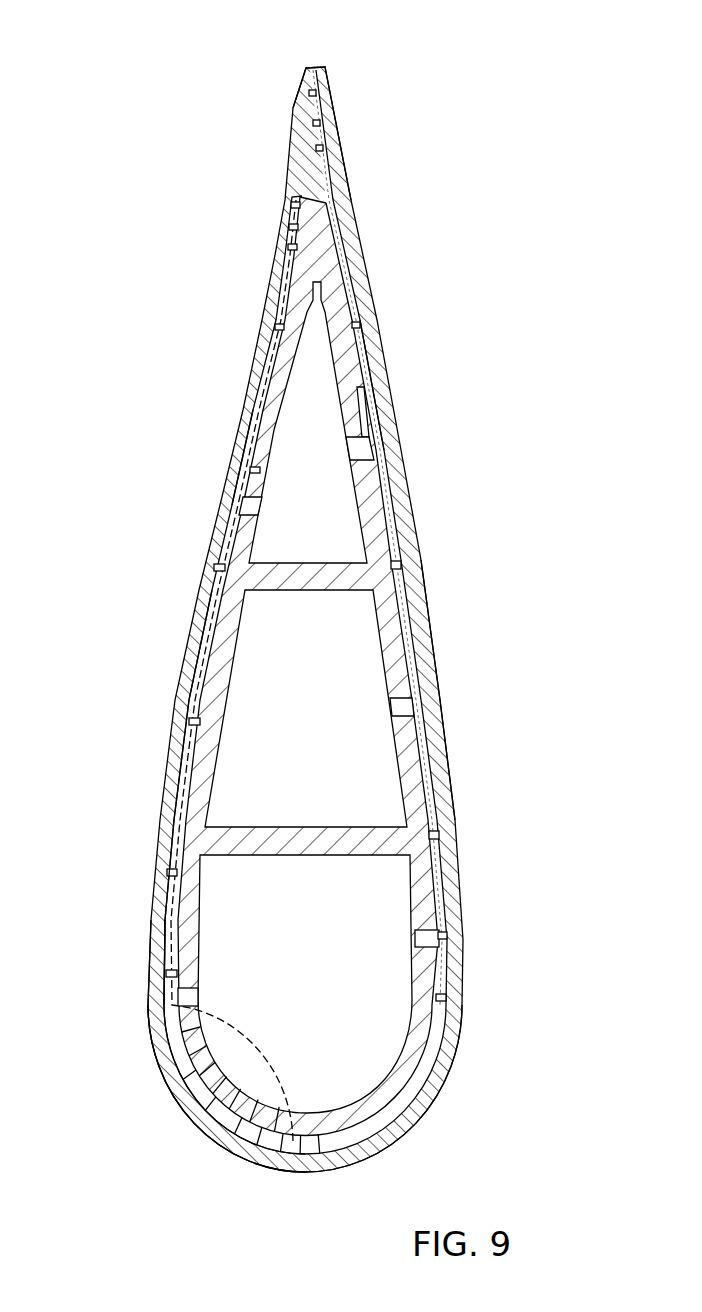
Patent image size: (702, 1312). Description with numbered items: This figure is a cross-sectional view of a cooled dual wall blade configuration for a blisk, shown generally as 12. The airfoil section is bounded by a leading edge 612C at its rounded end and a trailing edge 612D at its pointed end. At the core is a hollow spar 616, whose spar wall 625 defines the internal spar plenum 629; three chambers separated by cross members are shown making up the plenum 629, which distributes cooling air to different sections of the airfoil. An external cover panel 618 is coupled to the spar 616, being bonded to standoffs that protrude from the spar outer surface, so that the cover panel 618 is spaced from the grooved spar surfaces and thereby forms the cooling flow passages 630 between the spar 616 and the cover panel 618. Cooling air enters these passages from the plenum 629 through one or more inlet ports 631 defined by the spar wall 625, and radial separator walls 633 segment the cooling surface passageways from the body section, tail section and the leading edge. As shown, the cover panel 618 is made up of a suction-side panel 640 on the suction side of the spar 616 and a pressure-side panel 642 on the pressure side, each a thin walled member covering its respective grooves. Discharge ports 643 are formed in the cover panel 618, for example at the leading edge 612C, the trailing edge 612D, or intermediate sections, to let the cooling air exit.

The rotor blade 12 is at (445, 62).
The trailing edge 612D is at (302, 48).
The leading edge 612C is at (403, 1148).
The spar 616 is at (396, 760).
The cover panel 618 is at (158, 1070).
The spar wall 625 is at (425, 775).
The internal spar plenum 629 is at (323, 712).
The cooling flow passage 630 is at (412, 562).
The inlet port 631 is at (292, 74).
The radial separator wall 633 is at (378, 333).
The suction-side panel 640 is at (458, 834).
The pressure-side panel 642 is at (155, 766).
The discharge port 643 is at (146, 936).